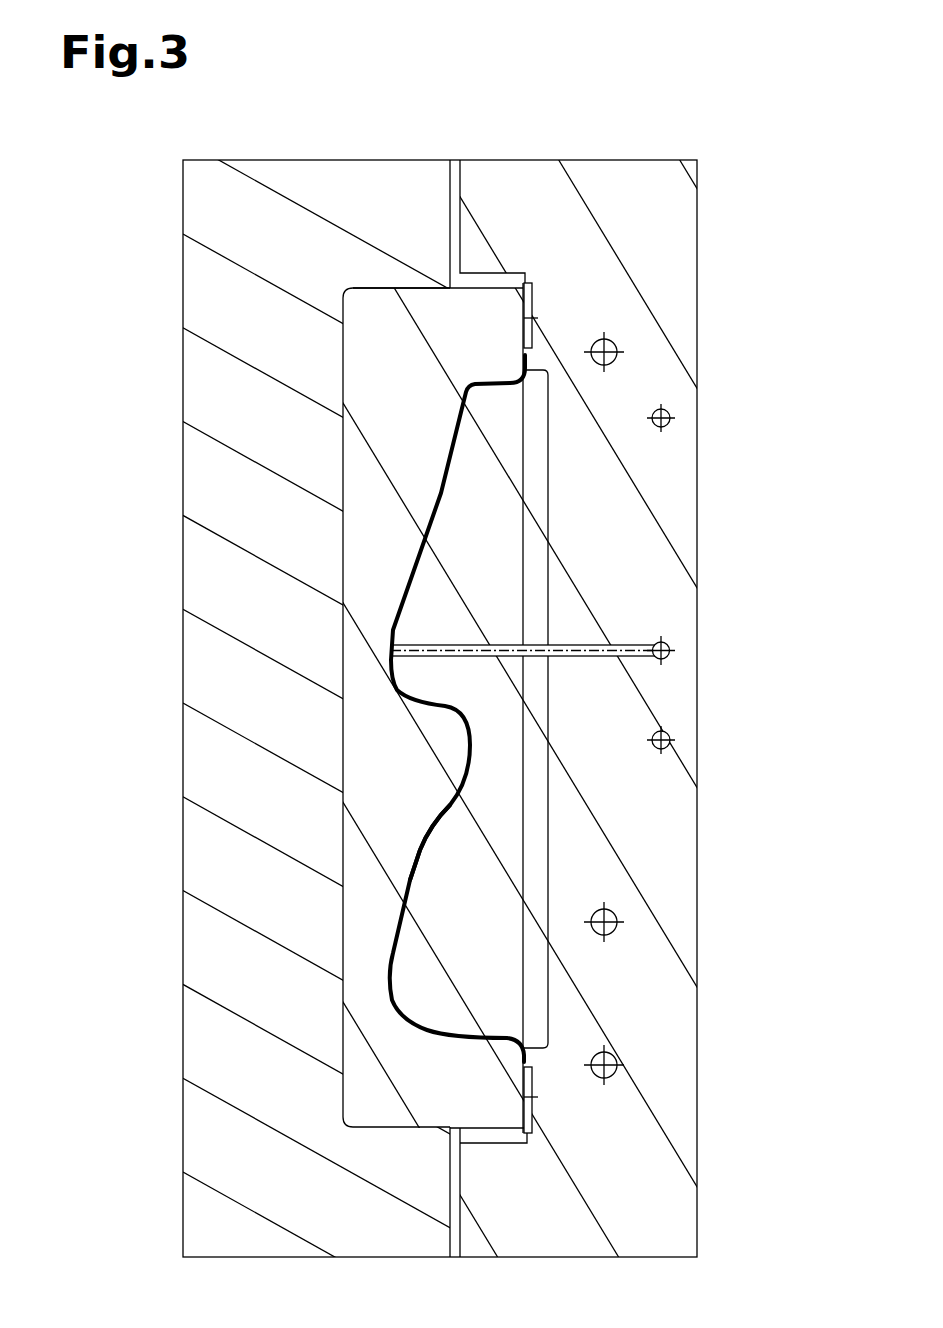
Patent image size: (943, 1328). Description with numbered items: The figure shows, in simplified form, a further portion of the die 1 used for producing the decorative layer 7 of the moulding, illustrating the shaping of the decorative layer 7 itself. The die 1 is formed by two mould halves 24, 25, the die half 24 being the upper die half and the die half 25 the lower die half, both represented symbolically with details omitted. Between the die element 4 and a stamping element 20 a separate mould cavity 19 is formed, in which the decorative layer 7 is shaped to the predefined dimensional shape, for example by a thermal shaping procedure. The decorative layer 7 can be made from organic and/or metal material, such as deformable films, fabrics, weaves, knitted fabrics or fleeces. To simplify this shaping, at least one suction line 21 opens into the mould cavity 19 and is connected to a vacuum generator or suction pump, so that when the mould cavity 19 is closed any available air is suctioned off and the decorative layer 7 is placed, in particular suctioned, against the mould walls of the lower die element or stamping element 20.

The die 1 is at (493, 82).
The die element 4 is at (370, 725).
The decorative layer 7 is at (395, 625).
The mould cavity 19 is at (417, 847).
The stamping element 20 is at (423, 932).
The suction line 21 is at (504, 647).
The mould half 24 is at (259, 140).
The mould half 25 is at (708, 128).